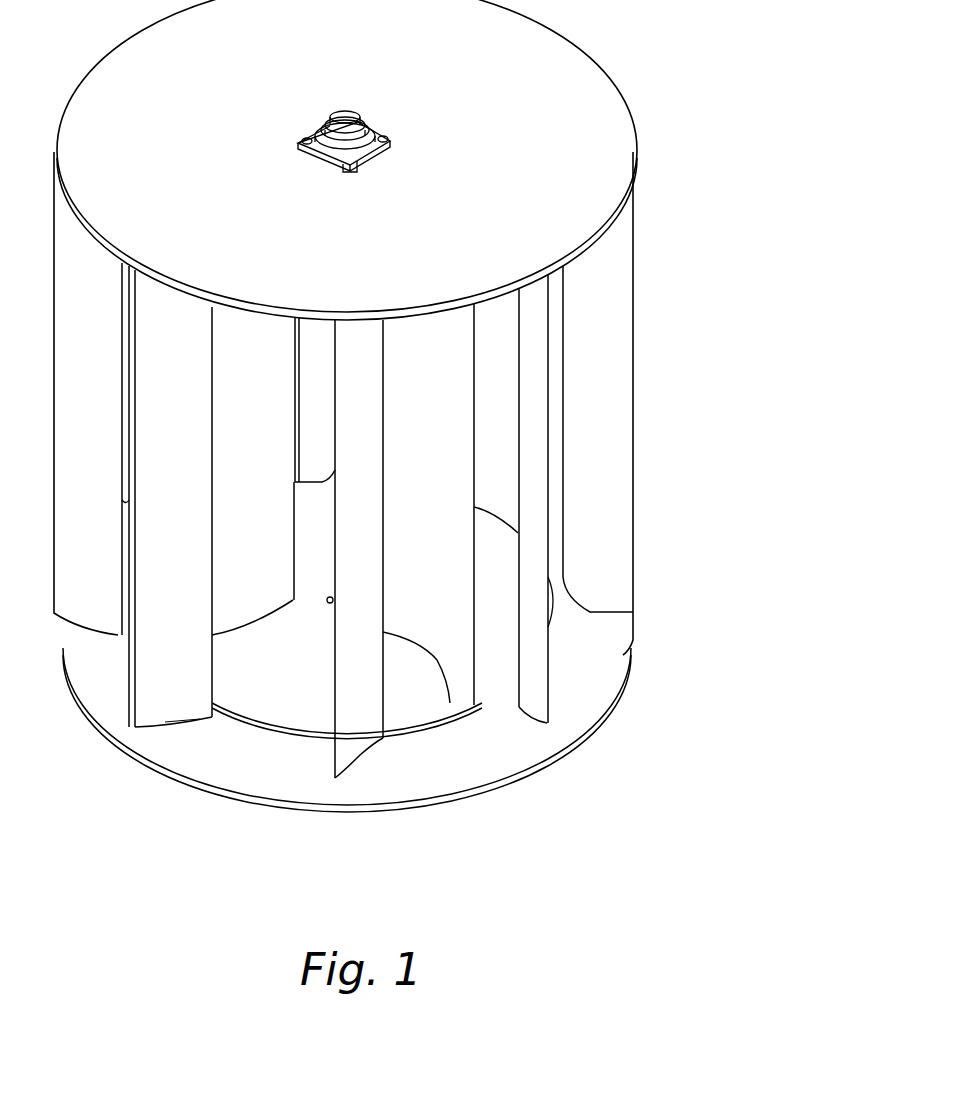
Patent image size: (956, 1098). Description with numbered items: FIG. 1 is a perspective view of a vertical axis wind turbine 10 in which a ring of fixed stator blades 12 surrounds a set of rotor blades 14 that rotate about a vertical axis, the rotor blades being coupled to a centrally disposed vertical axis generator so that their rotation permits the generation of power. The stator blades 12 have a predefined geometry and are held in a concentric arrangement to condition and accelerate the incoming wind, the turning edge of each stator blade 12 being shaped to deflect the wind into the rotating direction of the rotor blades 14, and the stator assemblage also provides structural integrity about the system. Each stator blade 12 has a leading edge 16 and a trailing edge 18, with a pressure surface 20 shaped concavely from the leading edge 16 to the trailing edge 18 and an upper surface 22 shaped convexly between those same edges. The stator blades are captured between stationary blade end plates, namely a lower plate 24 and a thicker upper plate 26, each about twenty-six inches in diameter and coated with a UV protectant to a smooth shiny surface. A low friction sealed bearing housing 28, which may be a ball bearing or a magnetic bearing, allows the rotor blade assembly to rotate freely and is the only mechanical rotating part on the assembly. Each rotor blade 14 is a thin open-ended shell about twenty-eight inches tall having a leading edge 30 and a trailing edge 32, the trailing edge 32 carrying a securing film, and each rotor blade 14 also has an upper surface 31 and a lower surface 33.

The vertical axis wind turbine 10 is at (712, 174).
The stator blade 12 is at (636, 371).
The rotor blade 14 is at (467, 690).
The leading edge 16 is at (133, 662).
The trailing edge 18 is at (212, 660).
The pressure surface 20 is at (182, 690).
The upper surface 22 is at (600, 488).
The lower plate 24 is at (590, 663).
The upper plate 26 is at (604, 118).
The bearing housing 28 is at (382, 128).
The leading edge 30 is at (478, 315).
The upper surface 31 is at (256, 345).
The trailing edge 32 is at (293, 600).
The lower surface 33 is at (416, 336).